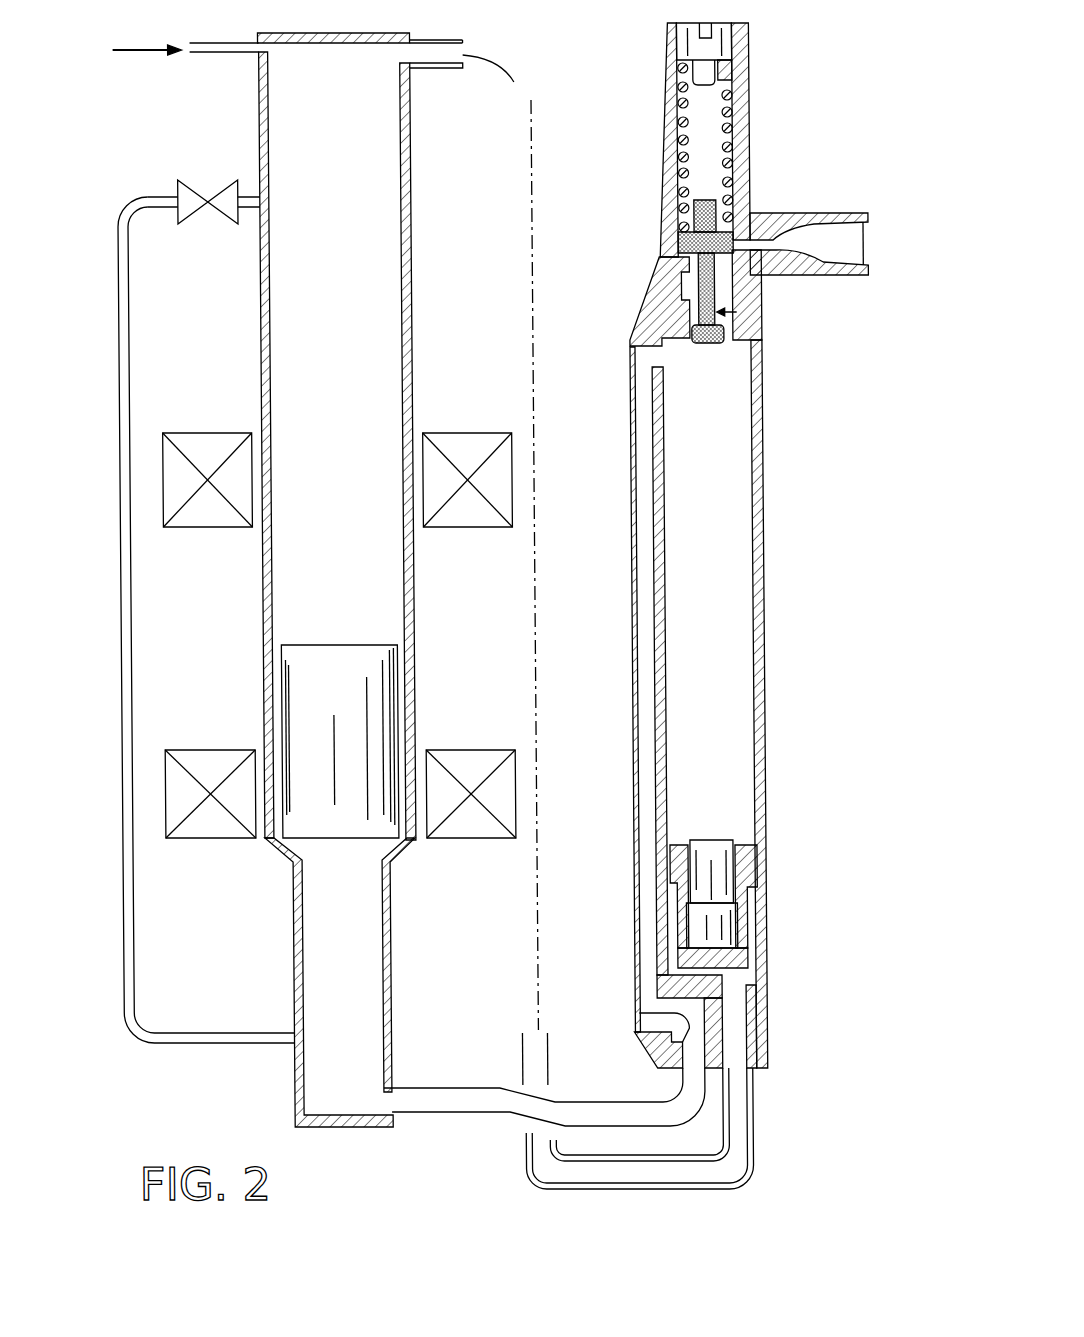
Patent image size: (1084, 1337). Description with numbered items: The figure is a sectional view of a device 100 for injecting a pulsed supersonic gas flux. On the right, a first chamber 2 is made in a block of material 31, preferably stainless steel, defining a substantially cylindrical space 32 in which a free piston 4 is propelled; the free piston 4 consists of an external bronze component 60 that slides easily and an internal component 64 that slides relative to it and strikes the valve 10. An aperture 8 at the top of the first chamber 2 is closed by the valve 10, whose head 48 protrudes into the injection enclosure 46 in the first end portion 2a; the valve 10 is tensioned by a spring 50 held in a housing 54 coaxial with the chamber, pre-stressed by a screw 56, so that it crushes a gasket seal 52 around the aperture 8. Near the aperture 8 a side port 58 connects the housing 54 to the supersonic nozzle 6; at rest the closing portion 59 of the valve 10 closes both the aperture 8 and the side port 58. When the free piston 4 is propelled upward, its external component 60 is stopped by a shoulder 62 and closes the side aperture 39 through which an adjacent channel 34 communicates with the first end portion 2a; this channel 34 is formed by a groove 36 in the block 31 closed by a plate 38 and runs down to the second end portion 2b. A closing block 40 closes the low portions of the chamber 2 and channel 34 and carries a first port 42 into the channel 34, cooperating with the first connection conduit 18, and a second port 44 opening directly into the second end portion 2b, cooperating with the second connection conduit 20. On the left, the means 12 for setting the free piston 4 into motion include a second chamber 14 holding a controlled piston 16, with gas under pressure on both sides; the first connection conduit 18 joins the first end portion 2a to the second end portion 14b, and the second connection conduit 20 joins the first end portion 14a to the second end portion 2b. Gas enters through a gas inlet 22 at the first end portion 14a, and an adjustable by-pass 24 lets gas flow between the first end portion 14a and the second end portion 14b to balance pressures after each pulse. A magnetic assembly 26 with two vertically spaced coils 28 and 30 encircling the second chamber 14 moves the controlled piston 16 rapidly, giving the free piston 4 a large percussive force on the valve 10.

The injection device 100 is at (603, 55).
The means for setting the free piston into motion 12 is at (440, 351).
The second chamber 14 is at (262, 258).
The first end portion of the second chamber 14a is at (412, 105).
The second end portion of the second chamber 14b is at (289, 1097).
The controlled piston 16 is at (305, 711).
The first connection conduit 18 is at (440, 1086).
The second connection conduit 20 is at (520, 1160).
The gas inlet 22 is at (226, 50).
The adjustable by-pass 24 is at (228, 200).
The magnetic assembly 26 is at (233, 412).
The coil 28 is at (215, 518).
The coil 30 is at (203, 832).
The first chamber 2 is at (762, 720).
The first end portion of the first chamber 2a is at (618, 343).
The second end portion of the first chamber 2b is at (766, 935).
The free piston 4 is at (741, 831).
The supersonic nozzle 6 is at (805, 222).
The aperture 8 is at (675, 290).
The valve 10 is at (737, 312).
The block of material 31 is at (774, 528).
The cylindrical space 32 is at (735, 625).
The adjacent channel 34 is at (645, 473).
The groove 36 is at (655, 548).
The plate 38 is at (629, 648).
The side aperture 39 is at (635, 352).
The closing block 40 is at (716, 1003).
The first port 42 is at (640, 1013).
The second port 44 is at (746, 1088).
The injection enclosure 46 is at (657, 318).
The head 48 is at (705, 345).
The spring 50 is at (729, 88).
The gasket seal 52 is at (685, 240).
The housing 54 is at (752, 132).
The screw 56 is at (686, 45).
The side port 58 is at (785, 273).
The closing portion 59 is at (707, 198).
The external component 60 is at (745, 867).
The shoulder 62 is at (740, 348).
The internal component 64 is at (707, 848).